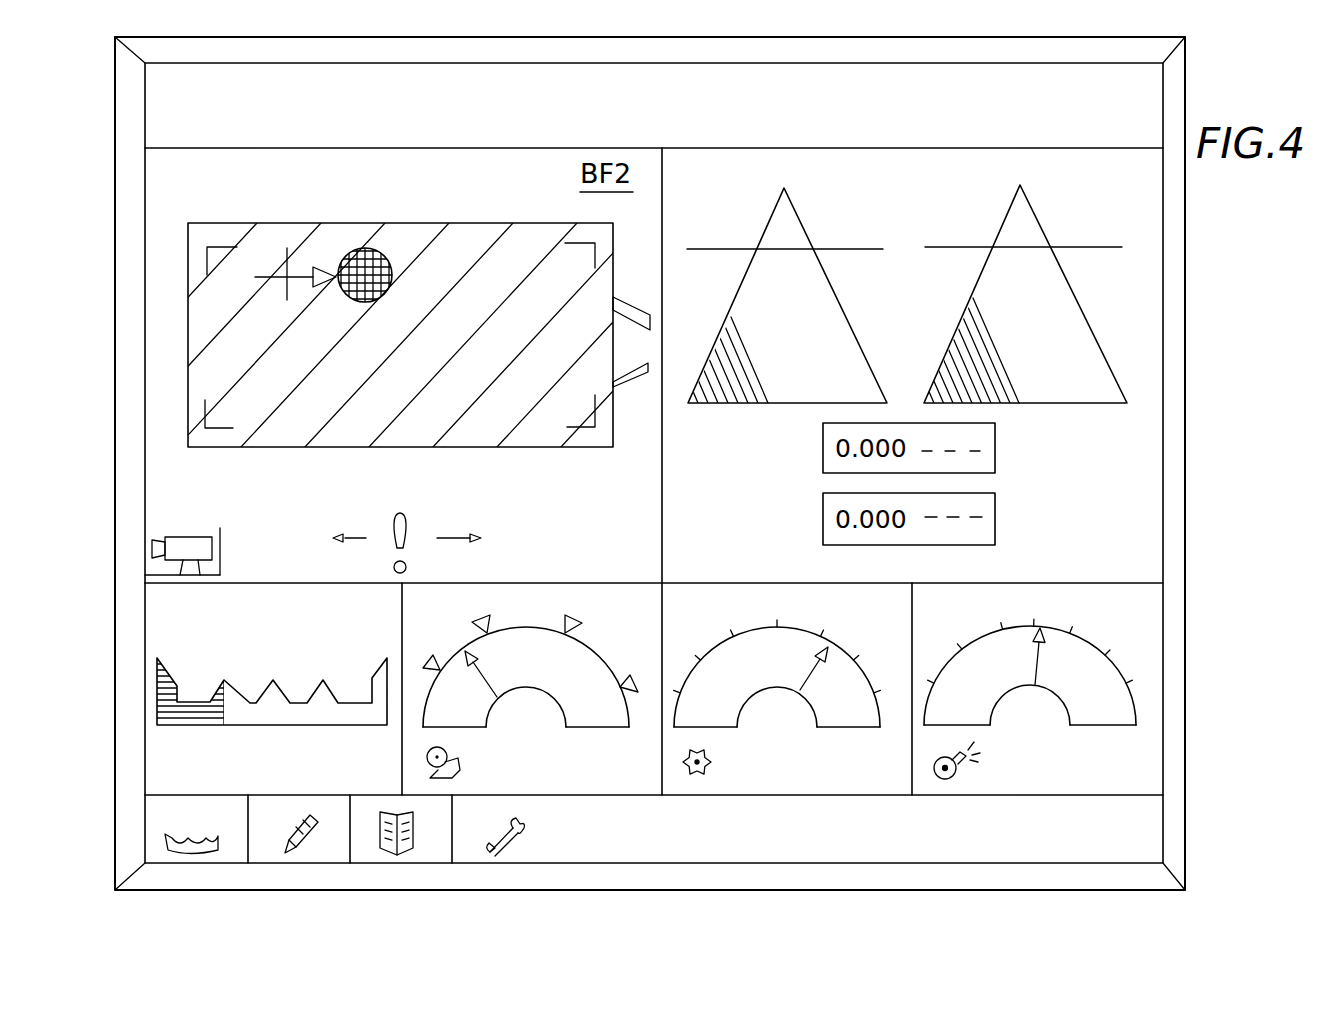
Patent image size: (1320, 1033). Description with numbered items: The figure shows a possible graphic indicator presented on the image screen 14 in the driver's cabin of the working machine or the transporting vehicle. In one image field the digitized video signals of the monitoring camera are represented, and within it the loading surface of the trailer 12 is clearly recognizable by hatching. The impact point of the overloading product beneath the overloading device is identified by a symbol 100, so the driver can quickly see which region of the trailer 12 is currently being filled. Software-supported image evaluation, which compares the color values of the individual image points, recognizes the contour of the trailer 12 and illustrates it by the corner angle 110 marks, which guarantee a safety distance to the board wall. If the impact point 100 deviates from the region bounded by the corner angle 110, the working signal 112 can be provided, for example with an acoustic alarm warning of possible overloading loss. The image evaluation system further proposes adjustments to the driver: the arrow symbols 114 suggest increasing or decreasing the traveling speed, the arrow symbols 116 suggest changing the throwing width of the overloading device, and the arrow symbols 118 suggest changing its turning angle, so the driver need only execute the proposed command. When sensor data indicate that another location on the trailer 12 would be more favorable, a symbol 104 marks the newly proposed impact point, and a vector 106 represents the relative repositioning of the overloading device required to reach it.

The trailer 12 is at (178, 334).
The image screen 14 is at (112, 405).
The symbol 100 is at (260, 276).
The symbol 104 is at (378, 262).
The vector 106 is at (303, 274).
The corner angle 110 is at (587, 431).
The working signal 112 is at (272, 661).
The arrow symbols 114 is at (340, 540).
The arrow symbols 116 is at (399, 493).
The arrow symbols 118 is at (349, 505).